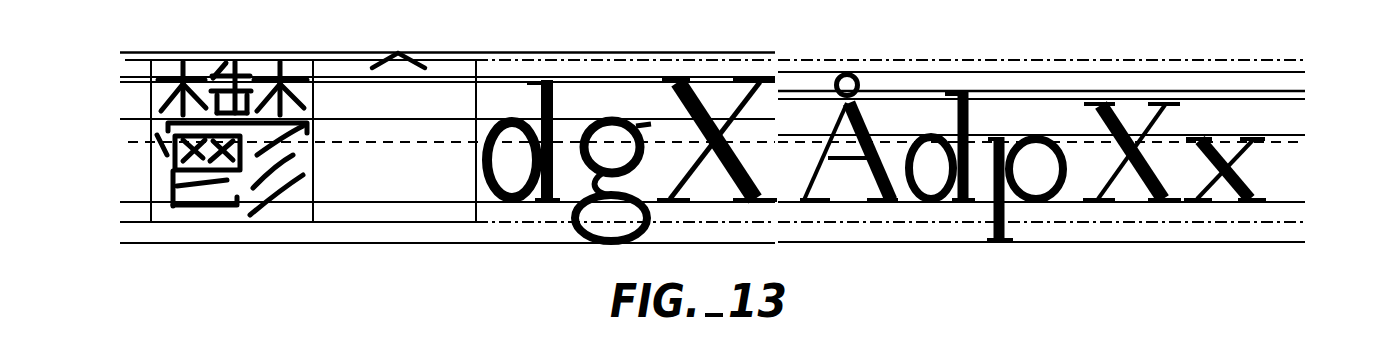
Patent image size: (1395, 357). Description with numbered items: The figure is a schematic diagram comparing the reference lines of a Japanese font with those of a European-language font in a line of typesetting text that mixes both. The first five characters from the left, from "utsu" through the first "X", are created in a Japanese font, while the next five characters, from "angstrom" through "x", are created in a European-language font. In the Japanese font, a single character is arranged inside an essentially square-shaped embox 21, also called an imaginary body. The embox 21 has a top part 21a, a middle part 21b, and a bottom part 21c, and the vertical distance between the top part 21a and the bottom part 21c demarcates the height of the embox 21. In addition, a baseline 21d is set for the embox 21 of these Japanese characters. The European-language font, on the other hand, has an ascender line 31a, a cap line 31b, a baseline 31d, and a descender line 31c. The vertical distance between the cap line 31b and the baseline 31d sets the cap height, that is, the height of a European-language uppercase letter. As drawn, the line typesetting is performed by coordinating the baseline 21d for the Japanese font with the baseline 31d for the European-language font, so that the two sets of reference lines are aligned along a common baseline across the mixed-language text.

The embox 21 is at (313, 168).
The top part 21a is at (126, 61).
The middle part 21b is at (123, 143).
The baseline 21d is at (125, 203).
The bottom part 21c is at (125, 224).
The ascender line 31a is at (1298, 90).
The cap line 31b is at (1297, 102).
The baseline 31d is at (1300, 201).
The descender line 31c is at (1296, 243).